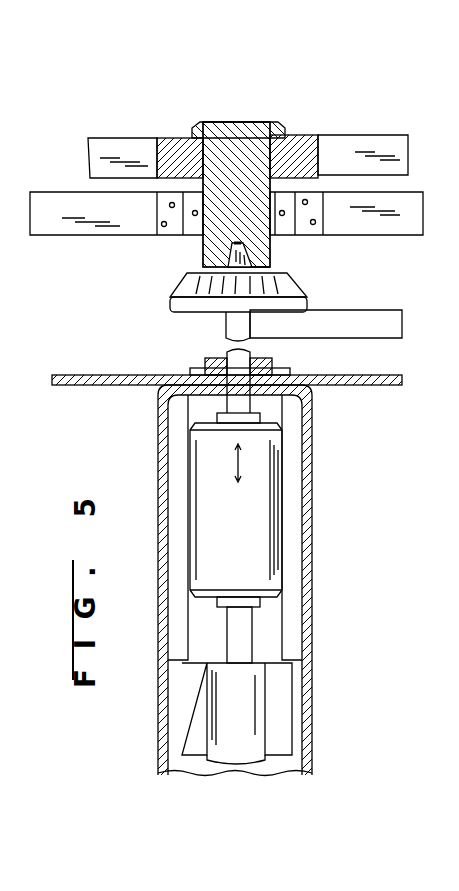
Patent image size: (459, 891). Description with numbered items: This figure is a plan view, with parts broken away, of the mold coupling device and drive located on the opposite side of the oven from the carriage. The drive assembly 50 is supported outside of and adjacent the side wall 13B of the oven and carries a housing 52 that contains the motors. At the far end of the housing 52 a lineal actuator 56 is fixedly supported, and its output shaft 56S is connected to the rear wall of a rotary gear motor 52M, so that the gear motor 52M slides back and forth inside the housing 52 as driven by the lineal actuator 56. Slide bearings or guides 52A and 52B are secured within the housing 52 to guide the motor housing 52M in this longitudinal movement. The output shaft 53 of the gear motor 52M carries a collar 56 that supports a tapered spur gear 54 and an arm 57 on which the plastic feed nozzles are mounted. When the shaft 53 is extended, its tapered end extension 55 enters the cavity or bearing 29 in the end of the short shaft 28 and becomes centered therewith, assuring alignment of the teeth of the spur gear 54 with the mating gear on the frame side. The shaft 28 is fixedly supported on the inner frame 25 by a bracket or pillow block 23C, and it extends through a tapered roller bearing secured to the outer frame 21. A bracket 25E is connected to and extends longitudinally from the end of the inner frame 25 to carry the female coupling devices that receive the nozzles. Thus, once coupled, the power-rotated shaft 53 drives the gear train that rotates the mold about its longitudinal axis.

The frame 21 is at (55, 192).
The inner frame 25 is at (125, 137).
The support block 23C is at (307, 150).
The bracket 25E is at (316, 225).
The second short shaft 28 is at (235, 121).
The cavity or bearing 29 is at (270, 264).
The end extension 55 is at (228, 258).
The tapered spur gear 54 is at (175, 291).
The arm 57 is at (388, 307).
The side wall of the oven 13B is at (77, 373).
The shaft 53 is at (255, 402).
The housing 52 is at (158, 702).
The slide bearing or guide 52A is at (177, 530).
The slide bearing or guide 52B is at (297, 523).
The rotary gear motor 52M is at (236, 515).
The output shaft 56S is at (227, 632).
The lineal actuator 56 is at (237, 713).
The drive assembly 50 is at (328, 652).